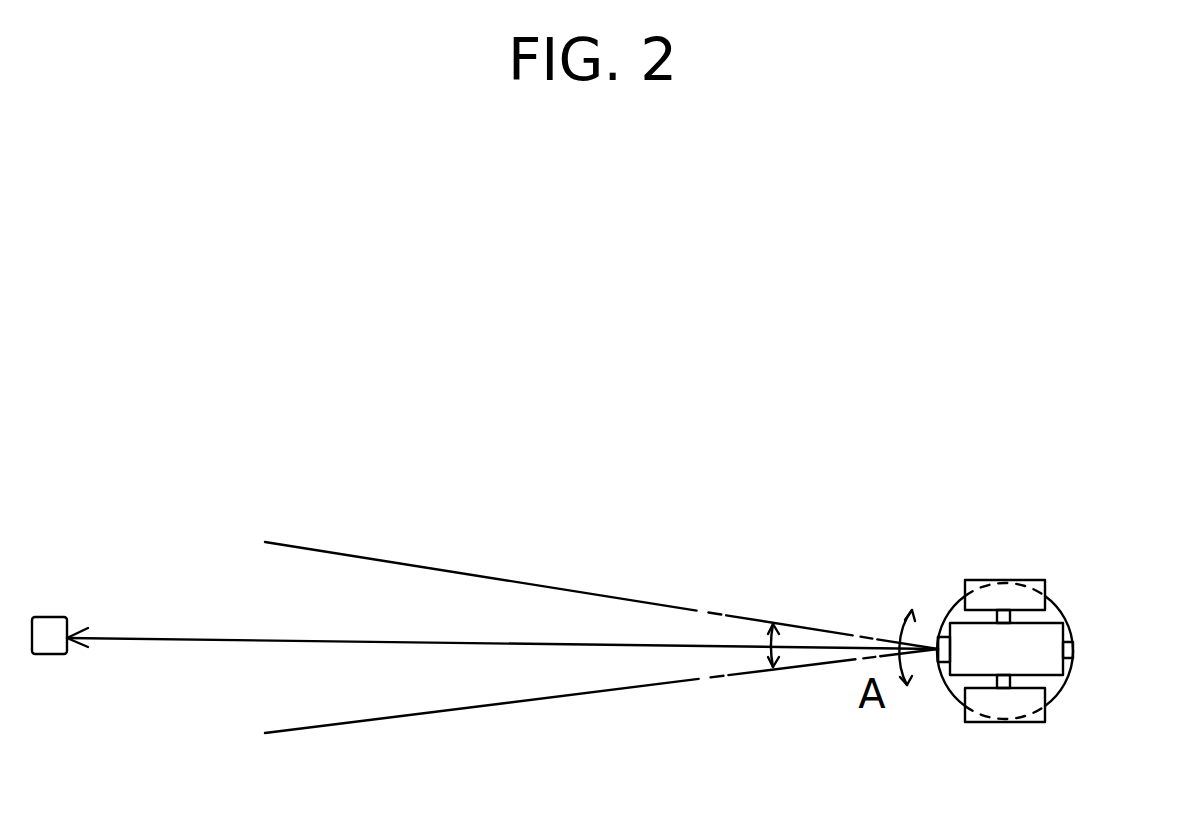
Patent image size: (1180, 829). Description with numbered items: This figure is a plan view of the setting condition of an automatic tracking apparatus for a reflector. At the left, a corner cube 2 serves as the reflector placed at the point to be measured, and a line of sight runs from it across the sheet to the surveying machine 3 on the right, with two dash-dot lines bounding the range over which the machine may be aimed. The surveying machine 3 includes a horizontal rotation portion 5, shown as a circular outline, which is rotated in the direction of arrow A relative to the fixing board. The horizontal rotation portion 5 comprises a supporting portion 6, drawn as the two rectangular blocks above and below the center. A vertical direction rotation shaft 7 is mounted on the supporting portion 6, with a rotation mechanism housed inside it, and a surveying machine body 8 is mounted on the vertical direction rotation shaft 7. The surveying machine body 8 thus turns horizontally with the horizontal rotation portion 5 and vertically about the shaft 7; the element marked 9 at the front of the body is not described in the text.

The object / light receiving element 2 is at (50, 620).
The scanner unit 3 is at (1035, 630).
The housing 5 is at (1077, 623).
The drive magnet 6 is at (1003, 594).
The connecting member 7 is at (1009, 621).
The mirror body 8 is at (1047, 665).
The reflecting surface 9 is at (947, 657).